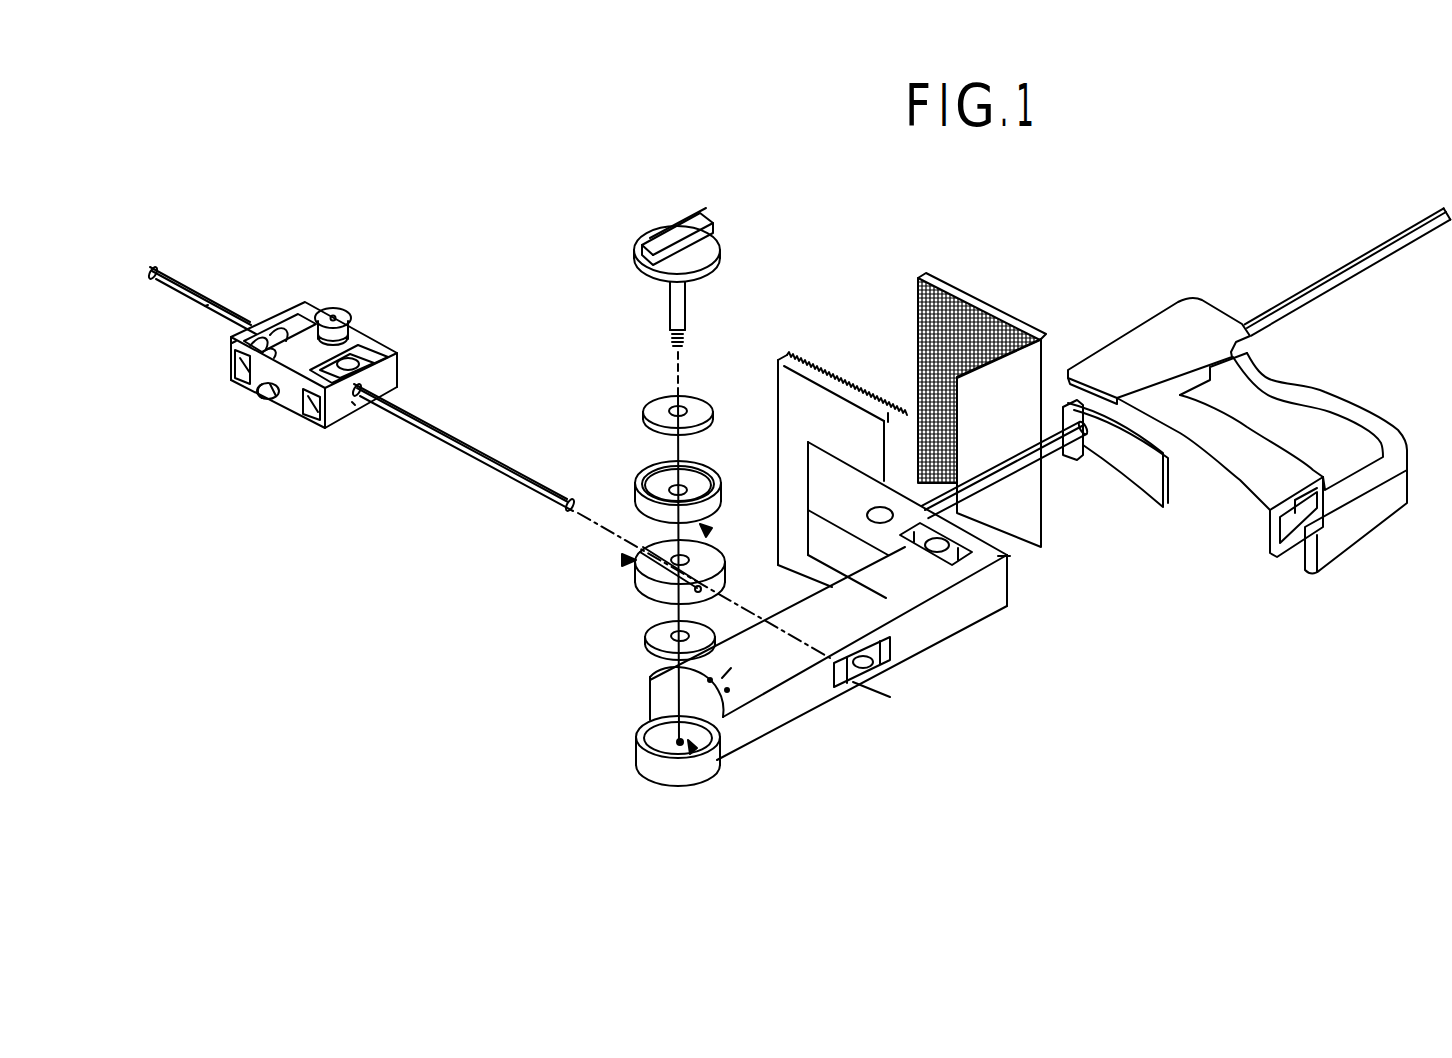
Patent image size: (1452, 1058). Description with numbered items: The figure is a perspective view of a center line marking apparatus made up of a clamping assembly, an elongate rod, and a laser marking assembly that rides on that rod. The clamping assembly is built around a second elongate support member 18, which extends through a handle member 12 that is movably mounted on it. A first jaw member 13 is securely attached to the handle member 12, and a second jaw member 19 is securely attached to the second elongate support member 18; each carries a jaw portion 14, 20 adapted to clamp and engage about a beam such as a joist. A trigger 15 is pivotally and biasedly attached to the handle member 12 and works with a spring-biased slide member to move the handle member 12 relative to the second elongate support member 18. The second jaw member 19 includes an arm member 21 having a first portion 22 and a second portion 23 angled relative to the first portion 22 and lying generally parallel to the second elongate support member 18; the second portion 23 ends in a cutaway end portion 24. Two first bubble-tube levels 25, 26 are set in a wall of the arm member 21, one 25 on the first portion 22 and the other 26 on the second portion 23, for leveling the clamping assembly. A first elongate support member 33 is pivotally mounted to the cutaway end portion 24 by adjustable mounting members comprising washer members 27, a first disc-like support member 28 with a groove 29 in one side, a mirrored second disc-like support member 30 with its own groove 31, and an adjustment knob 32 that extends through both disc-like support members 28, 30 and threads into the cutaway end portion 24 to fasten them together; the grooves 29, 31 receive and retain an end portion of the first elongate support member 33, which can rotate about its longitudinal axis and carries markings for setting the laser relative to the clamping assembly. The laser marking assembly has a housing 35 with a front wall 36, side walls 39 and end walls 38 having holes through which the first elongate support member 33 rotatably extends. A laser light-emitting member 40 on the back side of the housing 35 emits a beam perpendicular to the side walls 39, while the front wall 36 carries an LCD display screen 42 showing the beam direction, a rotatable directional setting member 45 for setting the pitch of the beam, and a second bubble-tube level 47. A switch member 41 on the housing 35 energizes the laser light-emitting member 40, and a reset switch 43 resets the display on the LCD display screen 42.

The handle member 12 is at (1317, 430).
The first jaw member 13 is at (1023, 373).
The jaw portion 14 is at (960, 302).
The trigger 15 is at (1256, 513).
The second elongate support member 18 is at (1080, 452).
The second jaw member 19 is at (794, 452).
The jaw portion 20 is at (808, 440).
The arm member 21 is at (772, 664).
The first portion 22 is at (1010, 556).
The second portion 23 is at (755, 730).
The cutaway end portion 24 is at (693, 752).
The first bubble-tube level 25 is at (955, 562).
The first bubble-tube level 26 is at (895, 668).
The washer members 27 is at (662, 405).
The first disc-like support member 28 is at (652, 582).
The groove 29 is at (624, 559).
The second disc-like support member 30 is at (714, 482).
The groove 31 is at (722, 545).
The adjustment knob 32 is at (703, 242).
The first elongate support member 33 is at (190, 290).
The housing 35 is at (304, 303).
The front wall 36 is at (303, 366).
The end wall 38 is at (355, 405).
The side wall 39 is at (232, 343).
The laser light-emitting member 40 is at (262, 398).
The switch member 41 is at (313, 414).
The LCD display screen 42 is at (205, 306).
The reset switch 43 is at (237, 370).
The directional setting member 45 is at (340, 310).
The second bubble-tube level 47 is at (378, 346).